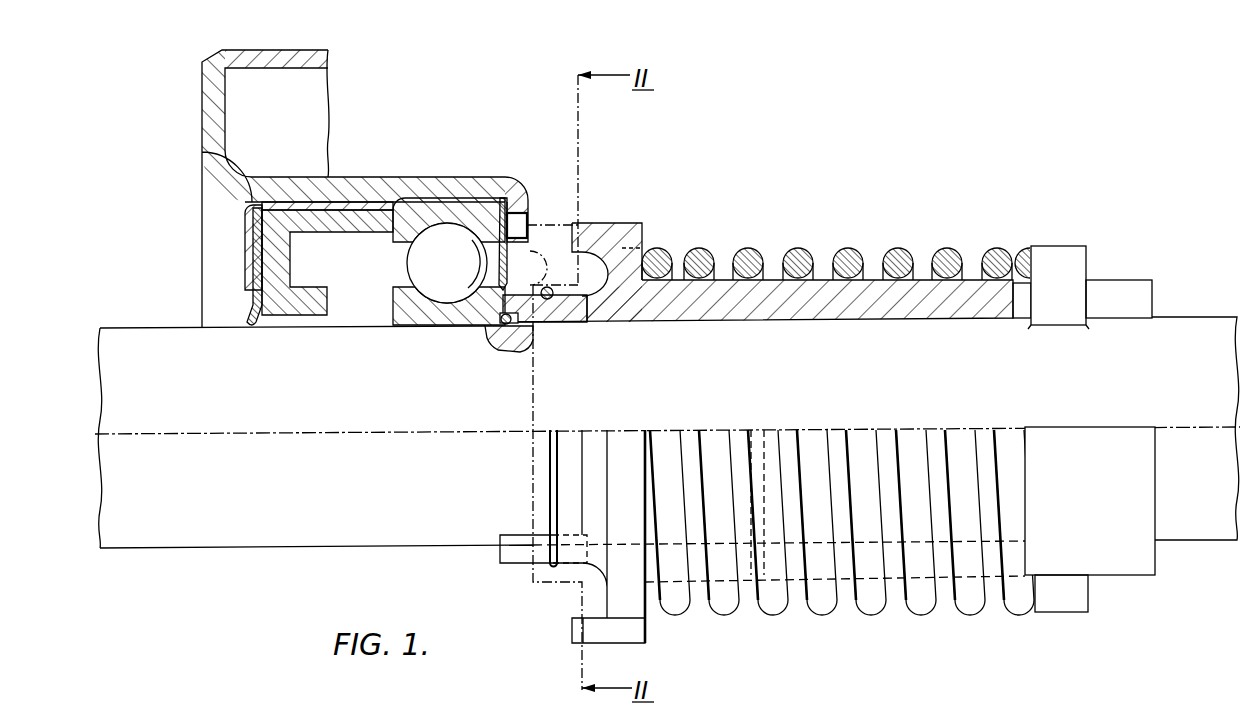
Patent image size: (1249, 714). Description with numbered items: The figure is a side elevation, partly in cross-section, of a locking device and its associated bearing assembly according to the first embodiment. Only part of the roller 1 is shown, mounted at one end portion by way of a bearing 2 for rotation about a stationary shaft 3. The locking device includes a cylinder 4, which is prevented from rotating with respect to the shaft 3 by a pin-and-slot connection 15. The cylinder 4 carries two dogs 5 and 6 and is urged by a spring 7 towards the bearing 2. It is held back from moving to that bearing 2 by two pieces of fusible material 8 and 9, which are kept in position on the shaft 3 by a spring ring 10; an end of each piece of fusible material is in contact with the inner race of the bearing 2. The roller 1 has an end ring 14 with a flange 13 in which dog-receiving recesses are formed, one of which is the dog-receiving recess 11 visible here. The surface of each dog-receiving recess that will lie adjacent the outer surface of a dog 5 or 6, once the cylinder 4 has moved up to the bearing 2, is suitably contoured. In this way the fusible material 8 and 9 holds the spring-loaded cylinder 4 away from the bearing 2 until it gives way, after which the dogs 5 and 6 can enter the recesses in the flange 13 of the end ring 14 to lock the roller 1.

The roller 1 is at (217, 123).
The bearing 2 is at (400, 257).
The stationary shaft 3 is at (178, 327).
The cylinder 4 is at (627, 303).
The dog 5 is at (619, 233).
The dog 6 is at (623, 628).
The spring 7 is at (797, 250).
The fusible material piece 8 is at (563, 308).
The fusible material piece 9 is at (518, 557).
The spring ring 10 is at (548, 452).
The dog-receiving recess 11 is at (522, 232).
The flange 13 is at (518, 194).
The end ring 14 is at (370, 188).
The pin-and-slot connection 15 is at (1060, 241).